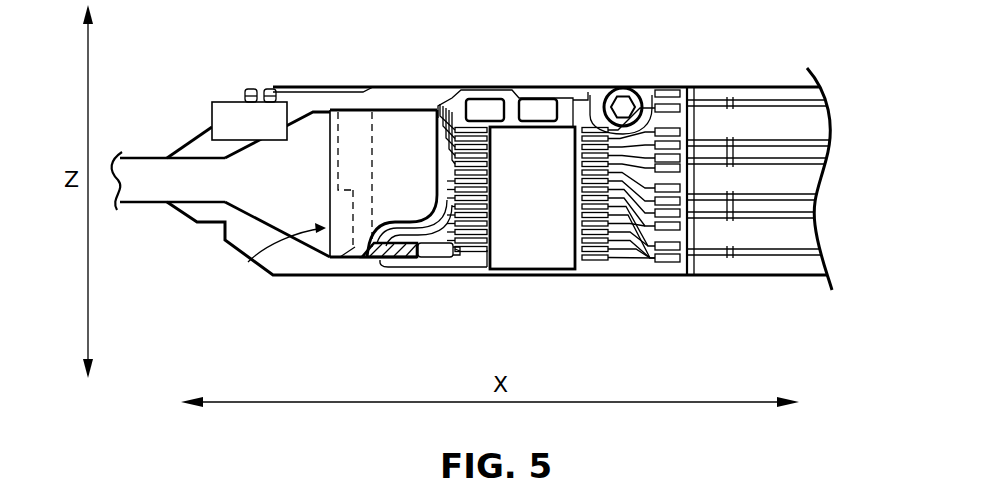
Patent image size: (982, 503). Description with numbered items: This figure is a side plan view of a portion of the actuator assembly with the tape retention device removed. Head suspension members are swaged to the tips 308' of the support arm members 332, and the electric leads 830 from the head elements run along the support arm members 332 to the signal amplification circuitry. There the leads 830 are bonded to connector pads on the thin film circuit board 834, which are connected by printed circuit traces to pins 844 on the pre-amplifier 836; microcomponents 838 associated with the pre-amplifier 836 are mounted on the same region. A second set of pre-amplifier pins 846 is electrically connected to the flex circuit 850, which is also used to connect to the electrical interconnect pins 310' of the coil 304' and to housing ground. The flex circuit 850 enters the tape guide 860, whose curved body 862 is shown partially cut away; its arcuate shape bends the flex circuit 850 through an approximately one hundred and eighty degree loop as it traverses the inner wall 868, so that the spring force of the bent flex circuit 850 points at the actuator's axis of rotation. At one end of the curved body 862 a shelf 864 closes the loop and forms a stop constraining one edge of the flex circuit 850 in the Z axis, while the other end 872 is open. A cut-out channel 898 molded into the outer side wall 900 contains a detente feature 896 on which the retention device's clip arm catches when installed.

The coil 304' is at (168, 156).
The coil electrical interconnect pins 310' is at (242, 95).
The tips of support arm members 308' is at (765, 181).
The support arm members 332 is at (773, 268).
The electric leads 830 is at (780, 258).
The thin film circuit board 834 is at (563, 93).
The pre-amplifier integrated circuit 836 is at (560, 200).
The microcomponents 838 is at (550, 108).
The pins on the pre-amplifier 844 is at (592, 260).
The second set of pre-amplifier pins 846 is at (482, 250).
The flex circuit 850 is at (377, 270).
The tape guide 860 is at (273, 260).
The curved body 862 is at (427, 187).
The shelf 864 is at (372, 260).
The inner wall 868 is at (373, 140).
The other end of the tape guide body 872 is at (392, 110).
The detente feature 896 is at (340, 213).
The cut-out channel 898 is at (352, 247).
The outer side wall 900 is at (330, 177).